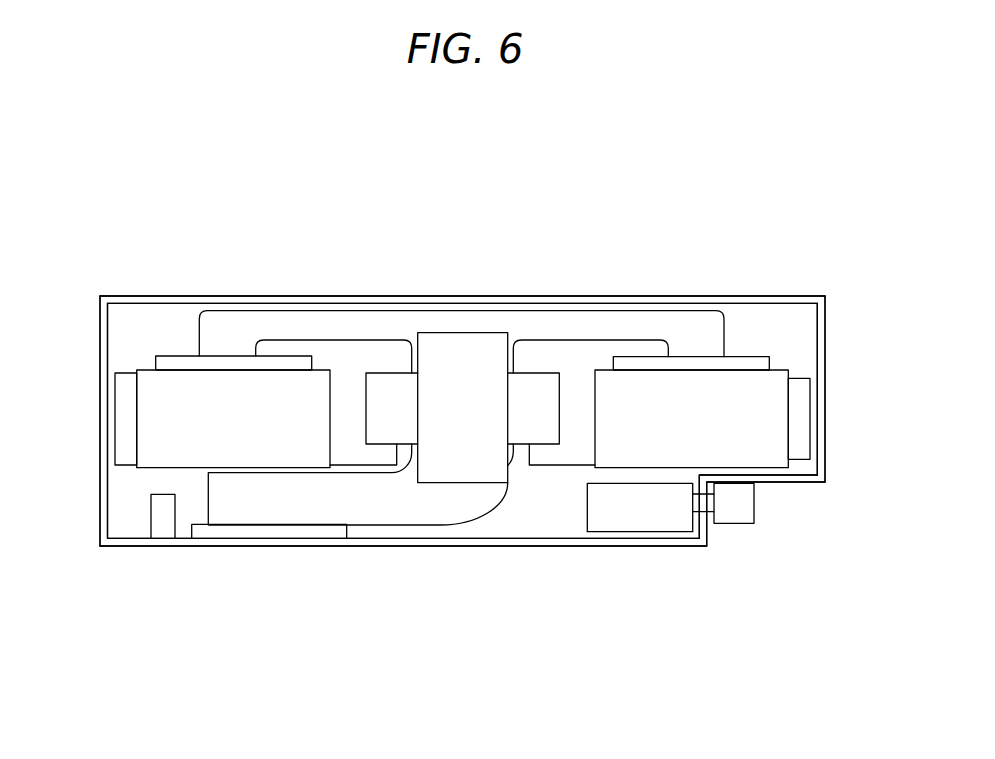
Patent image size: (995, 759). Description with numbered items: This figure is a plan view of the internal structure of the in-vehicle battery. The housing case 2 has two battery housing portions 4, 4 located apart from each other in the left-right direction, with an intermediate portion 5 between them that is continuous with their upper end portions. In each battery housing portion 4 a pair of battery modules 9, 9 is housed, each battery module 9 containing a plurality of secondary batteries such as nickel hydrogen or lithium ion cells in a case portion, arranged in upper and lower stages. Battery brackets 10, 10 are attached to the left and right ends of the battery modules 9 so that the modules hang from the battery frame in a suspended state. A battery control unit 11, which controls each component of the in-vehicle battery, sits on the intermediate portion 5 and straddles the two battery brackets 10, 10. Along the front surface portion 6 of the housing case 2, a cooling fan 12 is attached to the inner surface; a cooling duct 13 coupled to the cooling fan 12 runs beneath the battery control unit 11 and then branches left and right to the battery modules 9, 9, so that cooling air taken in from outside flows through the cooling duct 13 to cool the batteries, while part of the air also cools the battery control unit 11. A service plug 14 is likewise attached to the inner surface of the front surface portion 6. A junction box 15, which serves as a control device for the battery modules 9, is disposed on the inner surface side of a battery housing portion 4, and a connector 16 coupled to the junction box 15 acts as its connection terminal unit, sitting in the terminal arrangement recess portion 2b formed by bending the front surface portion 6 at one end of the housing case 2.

The housing case 2 is at (142, 297).
The terminal arrangement recess portion 2b is at (710, 532).
The battery housing portion 4 is at (183, 297).
The intermediate portion 5 is at (495, 298).
The front surface portion 6 is at (508, 547).
The battery module 9 is at (145, 377).
The battery bracket 10 is at (125, 422).
The battery control unit 11 is at (448, 345).
The cooling fan 12 is at (265, 532).
The cooling duct 13 is at (385, 510).
The service plug 14 is at (163, 528).
The junction box 15 is at (625, 518).
The connector 16 is at (743, 505).